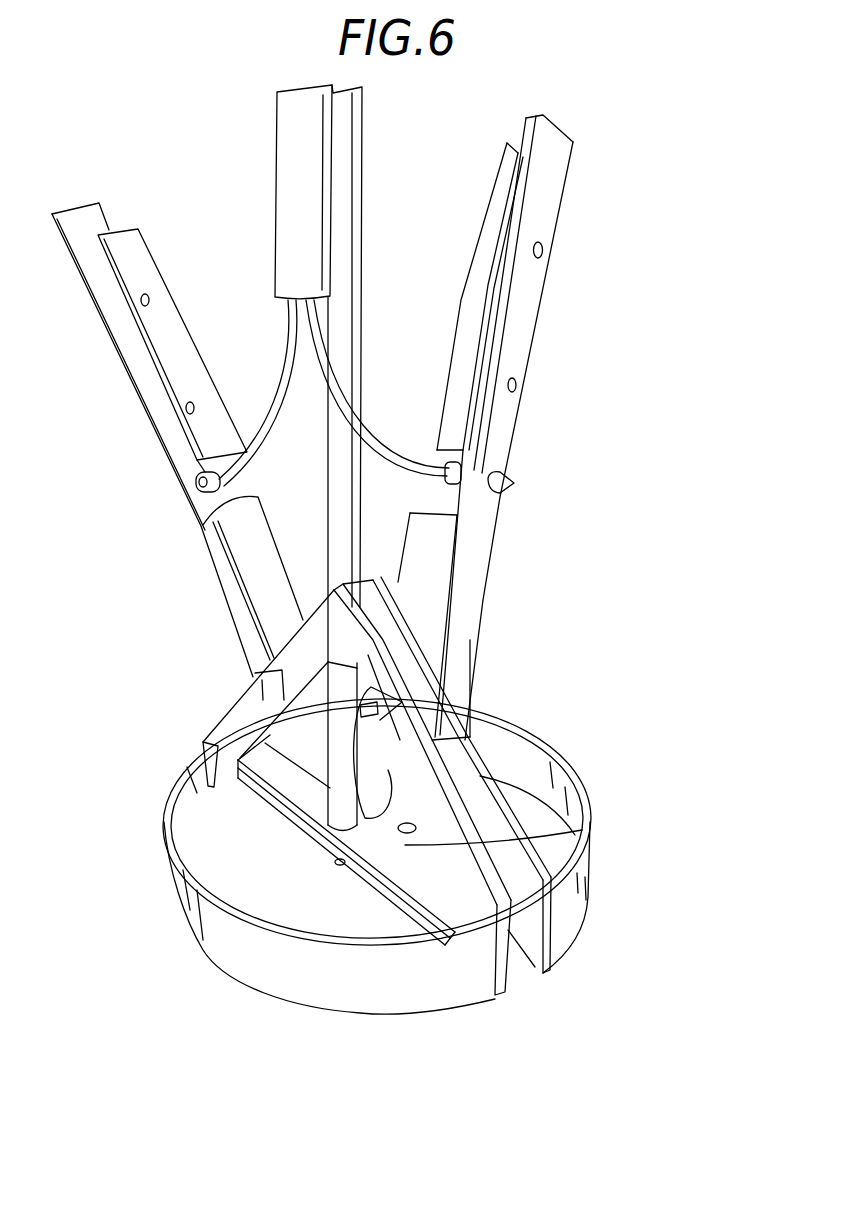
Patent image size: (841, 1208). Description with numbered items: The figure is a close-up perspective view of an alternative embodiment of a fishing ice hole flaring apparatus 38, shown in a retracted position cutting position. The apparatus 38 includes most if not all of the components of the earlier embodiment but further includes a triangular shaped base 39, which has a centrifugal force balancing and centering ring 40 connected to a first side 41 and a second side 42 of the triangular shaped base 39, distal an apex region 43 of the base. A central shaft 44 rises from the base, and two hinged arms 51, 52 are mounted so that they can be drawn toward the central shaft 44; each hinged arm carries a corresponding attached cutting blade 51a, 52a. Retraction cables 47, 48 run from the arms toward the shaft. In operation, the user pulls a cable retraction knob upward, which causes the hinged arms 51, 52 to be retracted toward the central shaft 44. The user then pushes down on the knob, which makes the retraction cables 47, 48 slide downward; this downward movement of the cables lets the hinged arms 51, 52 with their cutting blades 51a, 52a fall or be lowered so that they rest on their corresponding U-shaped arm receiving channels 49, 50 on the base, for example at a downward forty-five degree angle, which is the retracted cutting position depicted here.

The fishing ice hole flaring apparatus 38 is at (612, 183).
The triangular shaped base 39 is at (592, 748).
The centrifugal force balancing and centering ring 40 is at (350, 1014).
The first side 41 is at (257, 735).
The second side 42 is at (580, 830).
The apex region 43 is at (384, 604).
The central shaft 44 is at (362, 157).
The retraction cable 47 is at (265, 362).
The retraction cable 48 is at (377, 427).
The U-shaped arm receiving channel 49 is at (227, 713).
The U-shaped arm receiving channel 50 is at (519, 968).
The hinged arm 51 is at (200, 554).
The cutting blade 51a is at (153, 257).
The hinged arm 52 is at (500, 513).
The cutting blade 52a is at (468, 265).